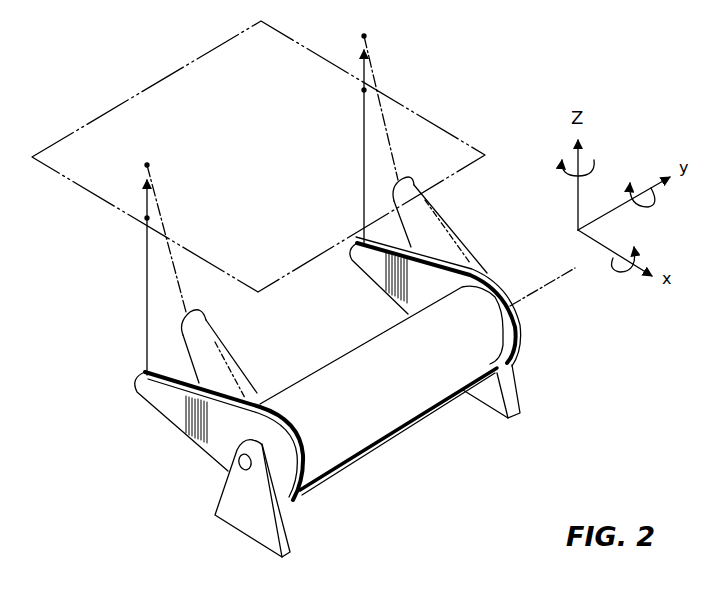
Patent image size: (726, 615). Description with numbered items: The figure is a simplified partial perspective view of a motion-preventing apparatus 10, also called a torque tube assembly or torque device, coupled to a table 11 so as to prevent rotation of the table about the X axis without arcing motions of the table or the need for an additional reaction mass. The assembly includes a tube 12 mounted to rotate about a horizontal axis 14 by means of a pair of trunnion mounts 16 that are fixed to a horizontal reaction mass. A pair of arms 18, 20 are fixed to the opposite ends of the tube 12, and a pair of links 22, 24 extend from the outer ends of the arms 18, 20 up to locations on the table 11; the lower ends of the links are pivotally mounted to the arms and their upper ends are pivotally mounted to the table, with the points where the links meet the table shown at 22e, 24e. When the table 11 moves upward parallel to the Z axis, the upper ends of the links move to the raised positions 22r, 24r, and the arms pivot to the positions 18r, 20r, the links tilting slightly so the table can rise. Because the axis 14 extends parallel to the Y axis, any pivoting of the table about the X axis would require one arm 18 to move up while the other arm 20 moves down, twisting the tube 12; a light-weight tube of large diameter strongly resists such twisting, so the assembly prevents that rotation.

The motion-preventing apparatus 10 is at (547, 375).
The table 11 is at (80, 187).
The tube 12 is at (382, 427).
The horizontal axis 14 is at (514, 297).
The trunnion mounts 16 is at (290, 553).
The arm 18 is at (173, 421).
The raised arm position 18r is at (236, 366).
The arm 20 is at (382, 288).
The raised arm position 20r is at (447, 228).
The link 22 is at (146, 314).
The first line intersection point 22e is at (146, 219).
The raised link position 22r is at (147, 165).
The link 24 is at (362, 211).
The second line intersection point 24e is at (363, 90).
The raised link position 24r is at (364, 36).